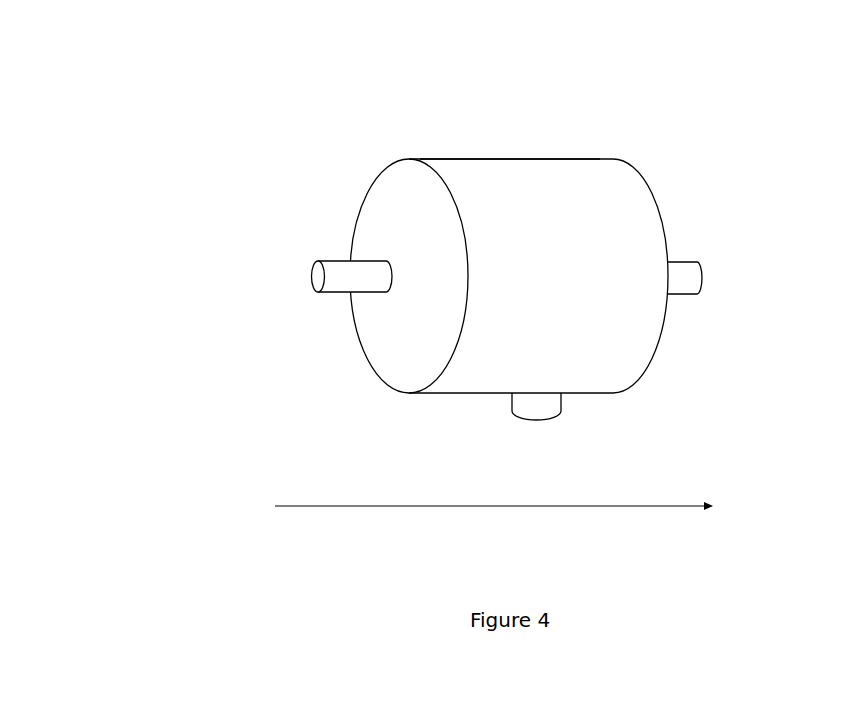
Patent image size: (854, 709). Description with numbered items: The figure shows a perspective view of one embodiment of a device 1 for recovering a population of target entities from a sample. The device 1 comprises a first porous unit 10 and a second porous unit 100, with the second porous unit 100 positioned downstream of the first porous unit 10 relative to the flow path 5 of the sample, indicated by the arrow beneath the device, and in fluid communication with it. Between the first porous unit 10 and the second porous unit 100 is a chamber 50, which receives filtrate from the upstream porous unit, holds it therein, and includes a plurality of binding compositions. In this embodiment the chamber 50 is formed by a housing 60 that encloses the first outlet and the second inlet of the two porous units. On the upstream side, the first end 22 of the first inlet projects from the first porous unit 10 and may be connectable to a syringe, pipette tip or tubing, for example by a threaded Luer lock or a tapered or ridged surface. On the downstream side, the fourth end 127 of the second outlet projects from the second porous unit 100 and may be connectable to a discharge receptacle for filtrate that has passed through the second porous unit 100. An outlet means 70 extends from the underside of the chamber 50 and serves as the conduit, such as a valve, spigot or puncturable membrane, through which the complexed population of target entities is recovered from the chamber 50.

The device 1 is at (82, 73).
The first porous unit 10 is at (352, 157).
The first end 22 is at (327, 261).
The chamber 50 is at (509, 276).
The housing 60 is at (536, 158).
The outlet means 70 is at (536, 406).
The second porous unit 100 is at (668, 375).
The fourth end 127 is at (694, 263).
The flow path 5 is at (494, 519).